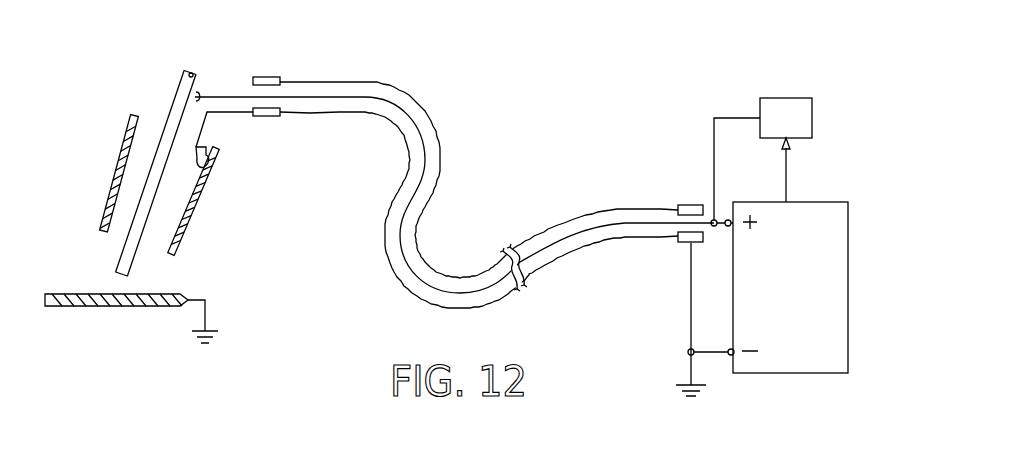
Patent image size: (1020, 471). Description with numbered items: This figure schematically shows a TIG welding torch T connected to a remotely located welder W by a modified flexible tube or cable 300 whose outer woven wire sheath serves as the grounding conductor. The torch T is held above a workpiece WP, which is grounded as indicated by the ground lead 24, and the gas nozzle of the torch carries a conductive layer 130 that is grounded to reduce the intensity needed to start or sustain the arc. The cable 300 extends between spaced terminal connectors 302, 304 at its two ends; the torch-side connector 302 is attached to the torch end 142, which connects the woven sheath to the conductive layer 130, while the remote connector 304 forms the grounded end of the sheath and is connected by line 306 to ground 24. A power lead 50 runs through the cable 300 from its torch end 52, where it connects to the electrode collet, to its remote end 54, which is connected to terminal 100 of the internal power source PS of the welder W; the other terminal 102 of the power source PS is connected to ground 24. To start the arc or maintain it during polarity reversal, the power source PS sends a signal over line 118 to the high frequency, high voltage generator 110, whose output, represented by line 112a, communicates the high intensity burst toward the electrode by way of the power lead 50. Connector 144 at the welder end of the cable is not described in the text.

The power lead 50 is at (233, 95).
The end 52 is at (197, 92).
The modified flexible tube 300 is at (375, 83).
The terminal connector 302 is at (270, 80).
The torch end 142 is at (203, 176).
The conductive layer 130 is at (187, 225).
The TIG welding torch T is at (108, 141).
The workpiece WP is at (90, 303).
The ground 24 is at (220, 337).
The cable connectors at power source 144 is at (681, 242).
The terminal connector 304 is at (680, 247).
The line 306 is at (690, 321).
The terminal 102 is at (730, 357).
The terminal 100 is at (724, 220).
The end 54 is at (728, 228).
The line 112a is at (713, 148).
The high frequency, high voltage generator 110 is at (797, 98).
The line 118 is at (790, 163).
The power source PS is at (850, 231).
The welder W is at (713, 103).